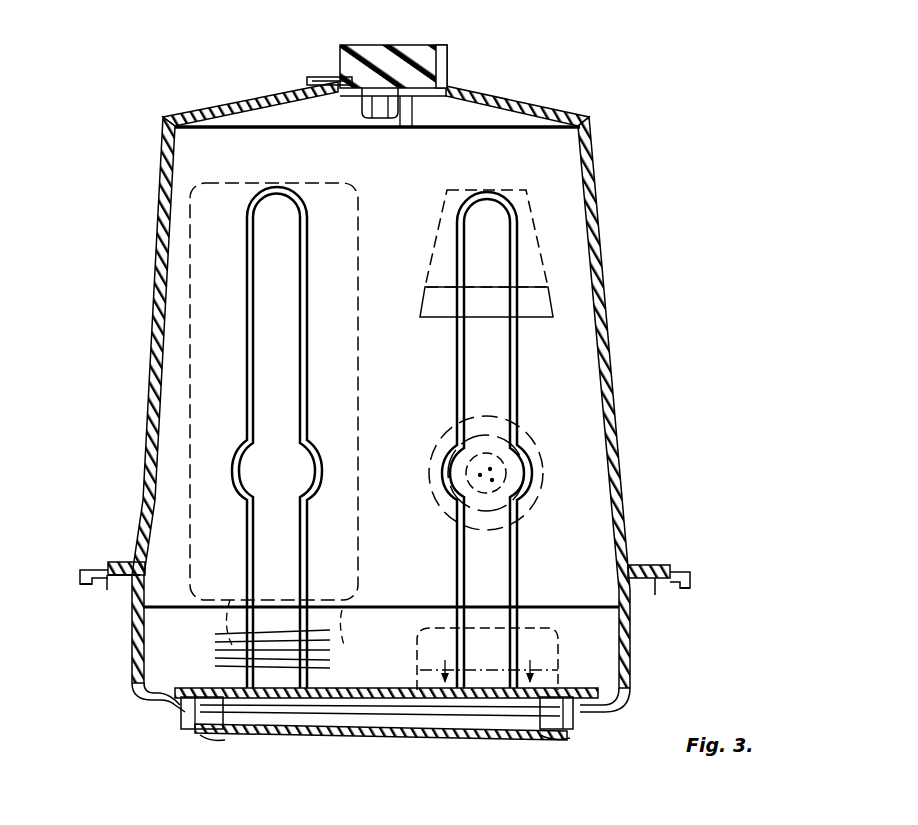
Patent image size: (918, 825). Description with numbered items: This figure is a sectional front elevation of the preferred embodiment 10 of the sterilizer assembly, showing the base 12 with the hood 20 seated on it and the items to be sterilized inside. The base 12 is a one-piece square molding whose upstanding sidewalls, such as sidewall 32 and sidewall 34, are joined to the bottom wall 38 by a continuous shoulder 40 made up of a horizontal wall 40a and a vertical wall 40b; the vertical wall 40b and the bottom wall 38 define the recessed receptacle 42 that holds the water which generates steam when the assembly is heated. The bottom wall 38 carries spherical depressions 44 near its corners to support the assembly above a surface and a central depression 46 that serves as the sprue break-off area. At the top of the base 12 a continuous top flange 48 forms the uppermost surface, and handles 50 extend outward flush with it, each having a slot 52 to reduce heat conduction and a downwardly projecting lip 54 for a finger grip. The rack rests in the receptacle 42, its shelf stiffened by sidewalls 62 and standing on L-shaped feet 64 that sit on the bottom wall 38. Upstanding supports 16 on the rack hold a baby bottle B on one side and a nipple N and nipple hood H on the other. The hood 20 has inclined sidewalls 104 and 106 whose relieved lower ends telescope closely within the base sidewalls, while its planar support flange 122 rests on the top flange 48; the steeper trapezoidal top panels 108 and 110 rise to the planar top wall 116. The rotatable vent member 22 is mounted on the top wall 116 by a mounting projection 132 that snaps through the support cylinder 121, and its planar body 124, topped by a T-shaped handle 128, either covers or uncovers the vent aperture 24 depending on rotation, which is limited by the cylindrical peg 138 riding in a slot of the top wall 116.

The sterilizer assembly 10 is at (628, 108).
The base 12 is at (636, 648).
The upstanding supports 16 is at (306, 372).
The hood 20 is at (596, 120).
The rotatable vent member 22 is at (450, 60).
The vent aperture 24 is at (330, 96).
The sidewall 32 is at (634, 680).
The sidewall 34 is at (132, 637).
The bottom wall 38 is at (345, 742).
The shoulder 40 is at (605, 690).
The horizontal wall 40a is at (132, 680).
The vertical wall 40b is at (190, 722).
The recessed receptacle 42 is at (310, 732).
The spherical depressions 44 is at (220, 740).
The central depression 46 is at (366, 742).
The top flange 48 is at (140, 572).
The handles 50 is at (96, 568).
The slot 52 is at (106, 590).
The lip 54 is at (84, 586).
The sidewalls 62 is at (426, 708).
The L-shaped feet 64 is at (196, 732).
The inclined sidewall 104 is at (604, 228).
The inclined sidewall 106 is at (408, 252).
The trapezoidal top panel 108 is at (180, 220).
The trapezoidal top panel 110 is at (528, 106).
The top wall 116 is at (401, 105).
The support cylinder 121 is at (365, 105).
The support flange 122 is at (120, 560).
The planar body 124 is at (327, 77).
The T-shaped handle 128 is at (425, 44).
The mounting projection 132 is at (372, 124).
The cylindrical peg 138 is at (428, 102).
The baby bottle B is at (190, 304).
The nipple hood H is at (530, 222).
The nipple N is at (535, 432).